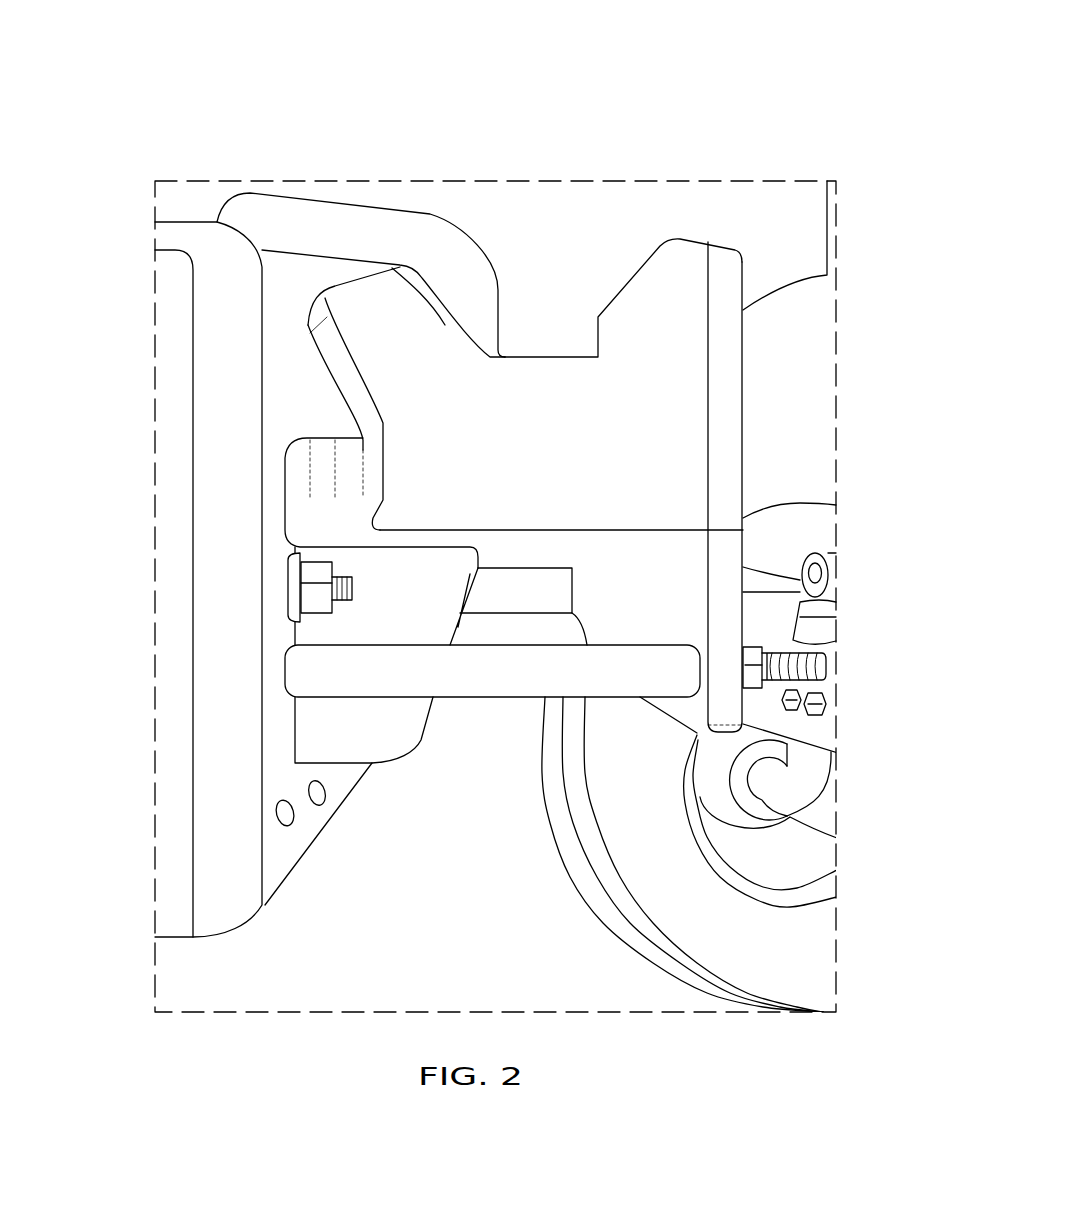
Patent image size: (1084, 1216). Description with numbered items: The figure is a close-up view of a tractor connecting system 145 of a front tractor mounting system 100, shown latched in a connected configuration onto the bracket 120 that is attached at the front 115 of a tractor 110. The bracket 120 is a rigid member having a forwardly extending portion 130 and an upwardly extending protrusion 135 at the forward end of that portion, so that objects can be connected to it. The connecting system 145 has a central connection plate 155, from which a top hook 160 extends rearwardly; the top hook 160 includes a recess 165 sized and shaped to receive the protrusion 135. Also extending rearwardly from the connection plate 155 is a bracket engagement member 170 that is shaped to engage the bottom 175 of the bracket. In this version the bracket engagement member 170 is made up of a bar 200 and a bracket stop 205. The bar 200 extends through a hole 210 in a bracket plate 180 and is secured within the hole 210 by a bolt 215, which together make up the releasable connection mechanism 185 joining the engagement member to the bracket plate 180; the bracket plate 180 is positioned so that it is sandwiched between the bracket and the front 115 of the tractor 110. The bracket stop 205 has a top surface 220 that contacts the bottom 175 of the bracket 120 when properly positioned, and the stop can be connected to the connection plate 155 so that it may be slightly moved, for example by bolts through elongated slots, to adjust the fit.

The farm implement tractor mounting system 100 is at (343, 80).
The tractor 110 is at (740, 116).
The front of the tractor 115 is at (698, 90).
The bracket 120 is at (558, 387).
The forwardly extending portion 130 is at (643, 440).
The upwardly extending protrusion 135 is at (413, 317).
The tractor connecting system 145 is at (452, 73).
The central connection plate 155 is at (220, 667).
The top hook 160 is at (467, 290).
The recess 165 is at (413, 287).
The bracket engagement member 170 is at (531, 750).
The bottom of the bracket 175 is at (603, 545).
The bracket plate 180 is at (723, 373).
The releasable connection mechanism 185 is at (826, 651).
The bar 200 is at (472, 677).
The bracket stop 205 is at (388, 733).
The hole 210 is at (693, 712).
The bolt 215 is at (828, 663).
The top surface 220 is at (383, 550).